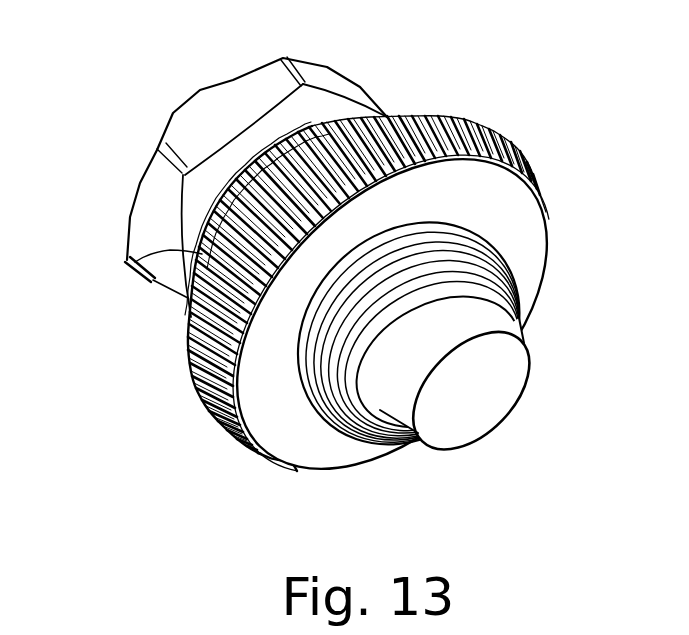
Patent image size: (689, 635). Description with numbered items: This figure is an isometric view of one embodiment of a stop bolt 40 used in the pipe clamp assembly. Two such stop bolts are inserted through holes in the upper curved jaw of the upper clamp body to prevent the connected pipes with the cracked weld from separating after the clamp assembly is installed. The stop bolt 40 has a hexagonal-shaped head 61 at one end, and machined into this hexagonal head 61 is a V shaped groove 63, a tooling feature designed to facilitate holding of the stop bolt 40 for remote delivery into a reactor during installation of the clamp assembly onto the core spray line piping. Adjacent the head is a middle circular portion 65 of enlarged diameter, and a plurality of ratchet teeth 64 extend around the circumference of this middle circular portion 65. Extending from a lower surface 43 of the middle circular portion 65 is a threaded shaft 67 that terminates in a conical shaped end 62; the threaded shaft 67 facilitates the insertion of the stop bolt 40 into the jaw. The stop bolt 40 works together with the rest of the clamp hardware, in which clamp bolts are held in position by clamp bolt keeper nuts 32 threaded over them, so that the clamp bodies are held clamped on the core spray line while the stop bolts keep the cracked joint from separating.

The clamp bolt keeper nut 32 is at (147, 271).
The stop bolt 40 is at (238, 161).
The lower surface 43 is at (520, 237).
The hexagonal-shaped head 61 is at (336, 86).
The conical shaped end 62 is at (487, 322).
The V shaped groove 63 is at (214, 166).
The ratchet teeth 64 is at (354, 264).
The middle circular portion 65 is at (213, 416).
The threaded shaft 67 is at (303, 397).